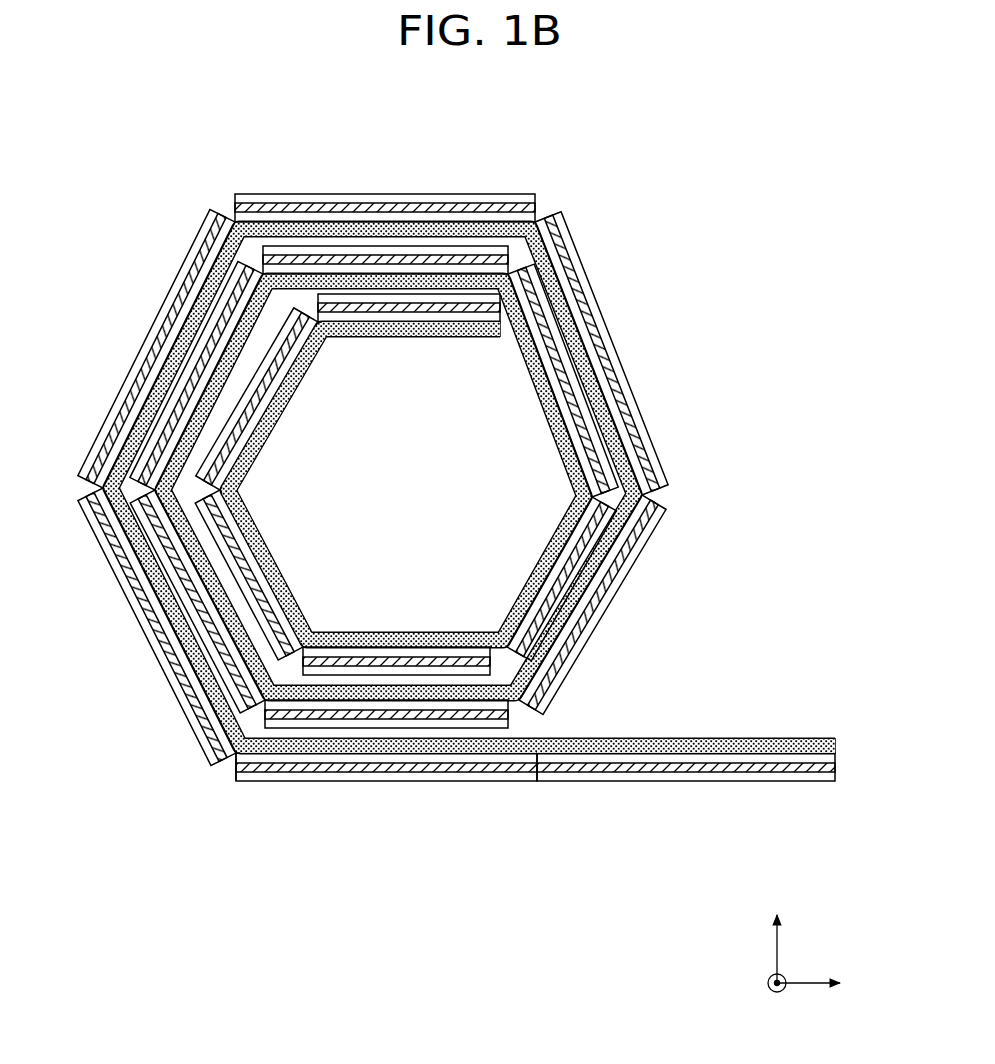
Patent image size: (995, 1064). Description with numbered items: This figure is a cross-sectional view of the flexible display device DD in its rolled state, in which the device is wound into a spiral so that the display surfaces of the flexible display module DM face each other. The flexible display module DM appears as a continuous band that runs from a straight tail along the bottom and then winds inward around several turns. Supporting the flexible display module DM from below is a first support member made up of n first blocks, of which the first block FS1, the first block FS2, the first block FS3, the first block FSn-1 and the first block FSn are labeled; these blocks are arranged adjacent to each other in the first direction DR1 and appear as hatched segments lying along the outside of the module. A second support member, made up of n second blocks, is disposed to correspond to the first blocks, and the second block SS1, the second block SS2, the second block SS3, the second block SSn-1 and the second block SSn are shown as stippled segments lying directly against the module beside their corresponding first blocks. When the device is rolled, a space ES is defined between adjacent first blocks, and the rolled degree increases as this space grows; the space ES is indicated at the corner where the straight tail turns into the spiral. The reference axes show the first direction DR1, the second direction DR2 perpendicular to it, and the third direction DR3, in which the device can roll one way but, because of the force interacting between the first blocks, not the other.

The flexible display device DD is at (692, 168).
The flexible display module DM is at (838, 743).
The space ES is at (231, 771).
The first block FS1 is at (473, 300).
The second block SS1 is at (422, 314).
The first block FS2 is at (283, 375).
The second block SS2 is at (275, 418).
The first block FS3 is at (270, 537).
The second block SS3 is at (283, 577).
The first block FSn-1 is at (320, 779).
The second block SSn-1 is at (417, 770).
The first block FSn is at (623, 779).
The second block SSn is at (717, 770).
The first direction DR1 is at (830, 985).
The second direction DR2 is at (780, 998).
The third direction DR3 is at (780, 935).